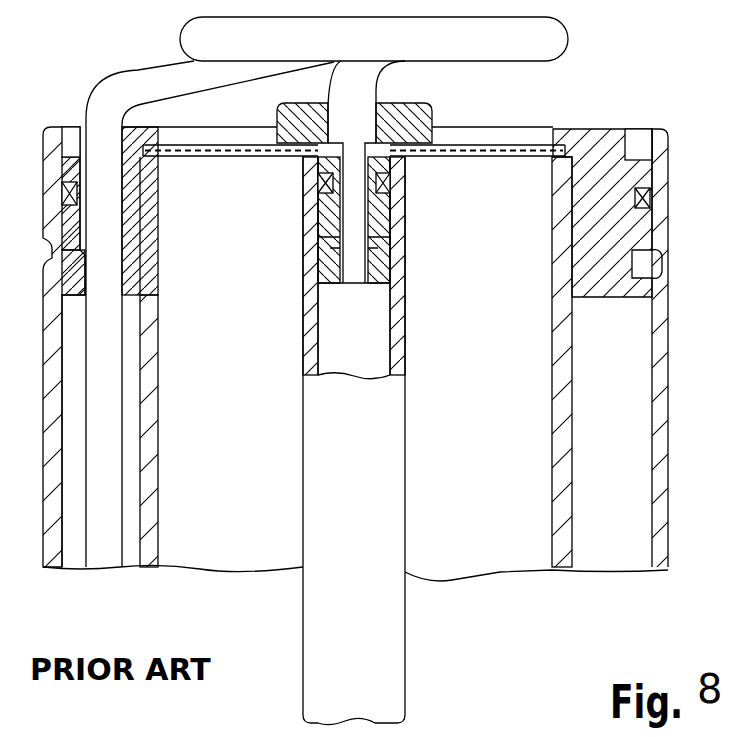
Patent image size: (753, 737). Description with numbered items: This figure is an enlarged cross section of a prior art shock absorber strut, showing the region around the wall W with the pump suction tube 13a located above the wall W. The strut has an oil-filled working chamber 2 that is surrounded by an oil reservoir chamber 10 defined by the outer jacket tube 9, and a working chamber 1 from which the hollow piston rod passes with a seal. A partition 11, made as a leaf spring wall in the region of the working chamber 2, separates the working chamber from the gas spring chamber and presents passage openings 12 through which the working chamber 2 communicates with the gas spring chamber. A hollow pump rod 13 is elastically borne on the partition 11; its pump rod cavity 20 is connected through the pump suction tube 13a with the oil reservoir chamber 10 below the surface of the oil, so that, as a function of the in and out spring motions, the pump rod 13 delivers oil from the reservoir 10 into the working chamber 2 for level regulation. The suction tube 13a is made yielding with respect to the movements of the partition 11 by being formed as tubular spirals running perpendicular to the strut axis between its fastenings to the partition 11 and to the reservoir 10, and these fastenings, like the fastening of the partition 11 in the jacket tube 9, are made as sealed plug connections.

The working chamber 1 is at (562, 473).
The working chamber 2 is at (487, 499).
The outer jacket tube 9 is at (660, 500).
The oil reservoir chamber 10 is at (75, 450).
The partition 11 is at (453, 157).
The passage openings 12 is at (217, 157).
The hollow pump rod 13 is at (390, 625).
The pump suction tube 13a is at (548, 37).
The pump rod cavity 20 is at (361, 344).
The wall W is at (640, 230).